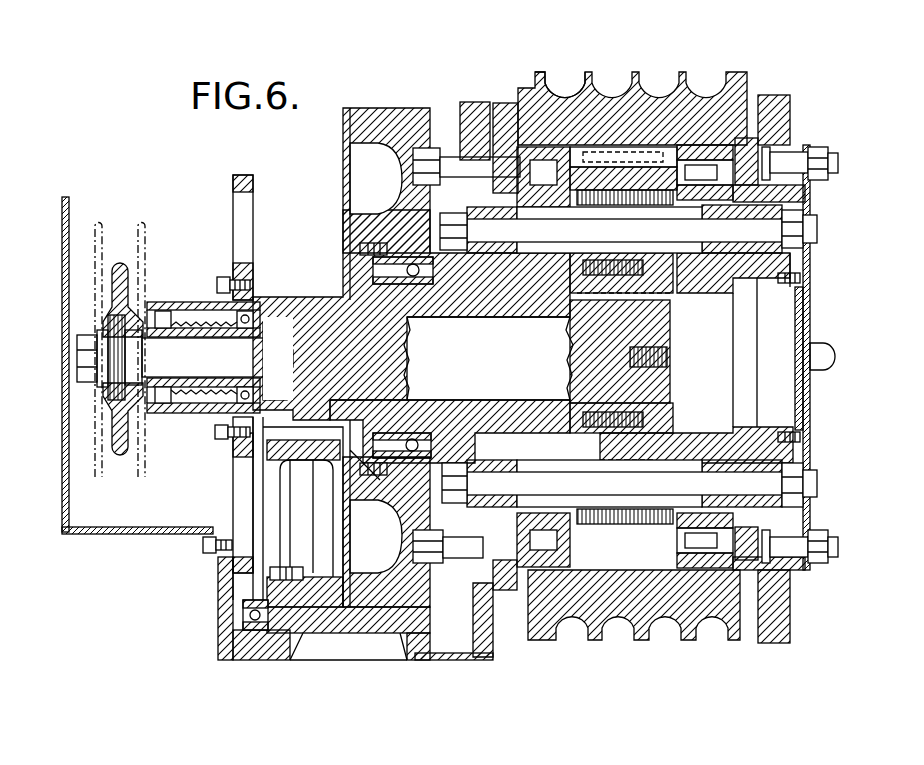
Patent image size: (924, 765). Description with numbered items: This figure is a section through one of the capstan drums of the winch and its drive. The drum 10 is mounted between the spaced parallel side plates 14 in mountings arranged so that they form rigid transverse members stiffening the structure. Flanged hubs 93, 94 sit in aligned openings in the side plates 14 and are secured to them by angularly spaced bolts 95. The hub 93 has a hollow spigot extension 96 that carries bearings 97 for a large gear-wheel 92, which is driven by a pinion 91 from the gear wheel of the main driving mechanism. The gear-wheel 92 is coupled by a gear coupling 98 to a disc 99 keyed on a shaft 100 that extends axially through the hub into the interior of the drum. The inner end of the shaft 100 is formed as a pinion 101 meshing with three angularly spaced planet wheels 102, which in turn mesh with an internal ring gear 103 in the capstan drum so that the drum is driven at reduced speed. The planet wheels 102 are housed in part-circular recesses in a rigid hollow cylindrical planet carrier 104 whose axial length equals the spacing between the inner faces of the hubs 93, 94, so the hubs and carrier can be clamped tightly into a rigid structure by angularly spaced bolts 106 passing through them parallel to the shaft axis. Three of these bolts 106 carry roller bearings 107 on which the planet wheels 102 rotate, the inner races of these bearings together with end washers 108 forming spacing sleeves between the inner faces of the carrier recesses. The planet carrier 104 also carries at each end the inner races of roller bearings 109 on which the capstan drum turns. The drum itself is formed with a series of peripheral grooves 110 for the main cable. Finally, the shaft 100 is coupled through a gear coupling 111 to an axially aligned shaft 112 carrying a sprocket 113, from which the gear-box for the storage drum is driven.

The drum 10 is at (557, 125).
The side plates 14 is at (780, 118).
The pinion 91 is at (290, 607).
The gear-wheel 92 is at (362, 145).
The flanged hub 93 is at (458, 152).
The flanged hub 94 is at (822, 200).
The bolts 95 is at (840, 163).
The hollow spigot extension 96 is at (410, 305).
The bearings 97 is at (365, 258).
The gear coupling 98 is at (365, 222).
The disc 99 is at (330, 482).
The shaft 100 is at (500, 371).
The pinion 101 is at (660, 380).
The planet wheels 102 is at (597, 187).
The internal ring gear 103 is at (642, 155).
The planet carrier 104 is at (722, 265).
The bolts 106 is at (817, 228).
The roller bearings 107 is at (657, 195).
The end washers 108 is at (548, 300).
The roller bearings 109 is at (703, 165).
The peripheral grooves 110 is at (562, 90).
The gear coupling 111 is at (273, 368).
The shaft 112 is at (178, 350).
The sprocket 113 is at (118, 265).